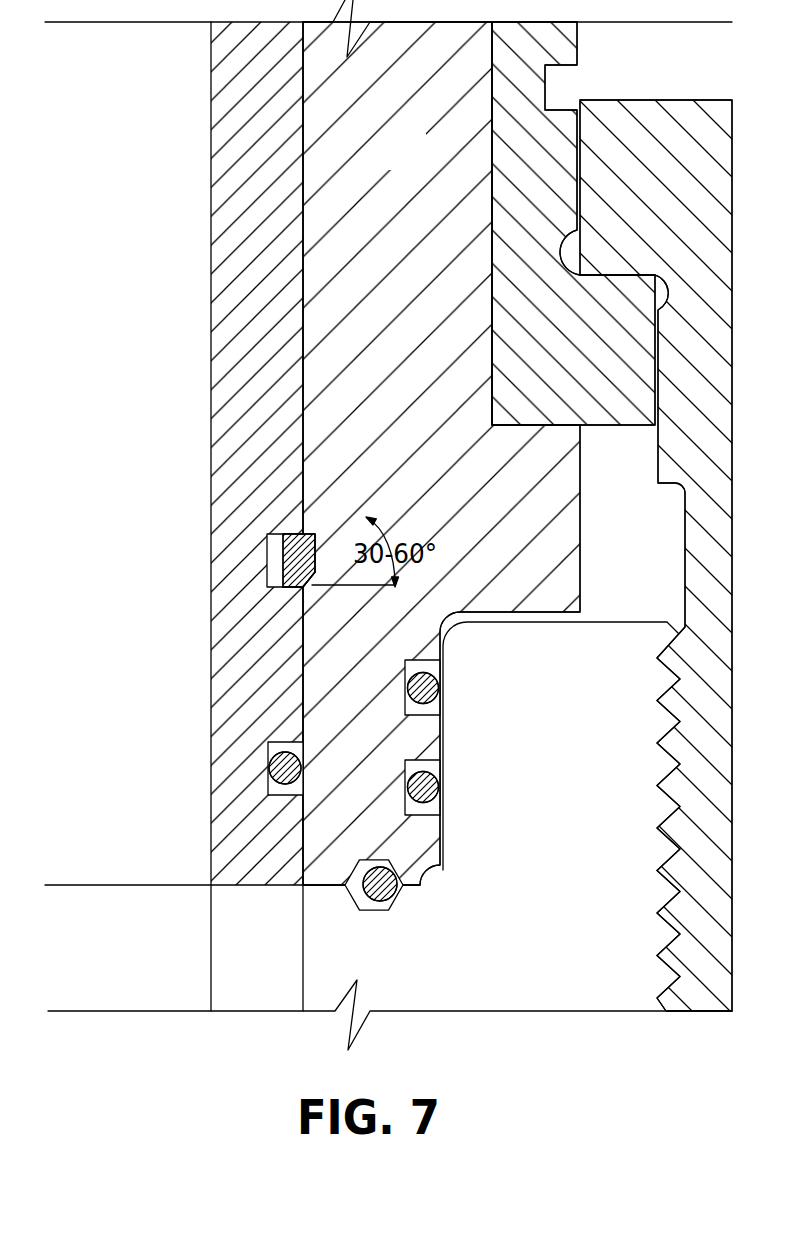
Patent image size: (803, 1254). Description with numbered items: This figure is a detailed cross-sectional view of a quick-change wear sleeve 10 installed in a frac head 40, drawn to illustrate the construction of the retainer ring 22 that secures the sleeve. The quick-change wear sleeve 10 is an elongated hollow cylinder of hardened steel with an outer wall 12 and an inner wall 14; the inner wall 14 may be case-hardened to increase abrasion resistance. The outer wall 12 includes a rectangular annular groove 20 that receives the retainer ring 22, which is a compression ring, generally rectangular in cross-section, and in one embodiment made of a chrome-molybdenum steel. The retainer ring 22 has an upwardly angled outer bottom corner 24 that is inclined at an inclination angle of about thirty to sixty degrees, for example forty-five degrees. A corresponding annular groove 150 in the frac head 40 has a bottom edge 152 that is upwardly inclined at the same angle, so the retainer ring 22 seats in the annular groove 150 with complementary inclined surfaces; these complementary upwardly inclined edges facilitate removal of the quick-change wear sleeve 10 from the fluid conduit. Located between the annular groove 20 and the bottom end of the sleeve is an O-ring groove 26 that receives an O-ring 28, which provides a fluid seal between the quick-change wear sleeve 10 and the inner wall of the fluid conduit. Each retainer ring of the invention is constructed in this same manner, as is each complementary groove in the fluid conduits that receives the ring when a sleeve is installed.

The quick-change wear sleeve 10 is at (84, 715).
The outer wall 12 is at (303, 323).
The inner wall 14 is at (210, 417).
The annular groove 20 is at (275, 547).
The retainer ring 22 is at (287, 534).
The upwardly angled outer bottom corner 24 is at (302, 581).
The O-ring groove 26 is at (287, 796).
The O-ring 28 is at (270, 766).
The frac head 40 is at (418, 165).
The annular groove 150 is at (320, 537).
The bottom edge 152 is at (310, 584).